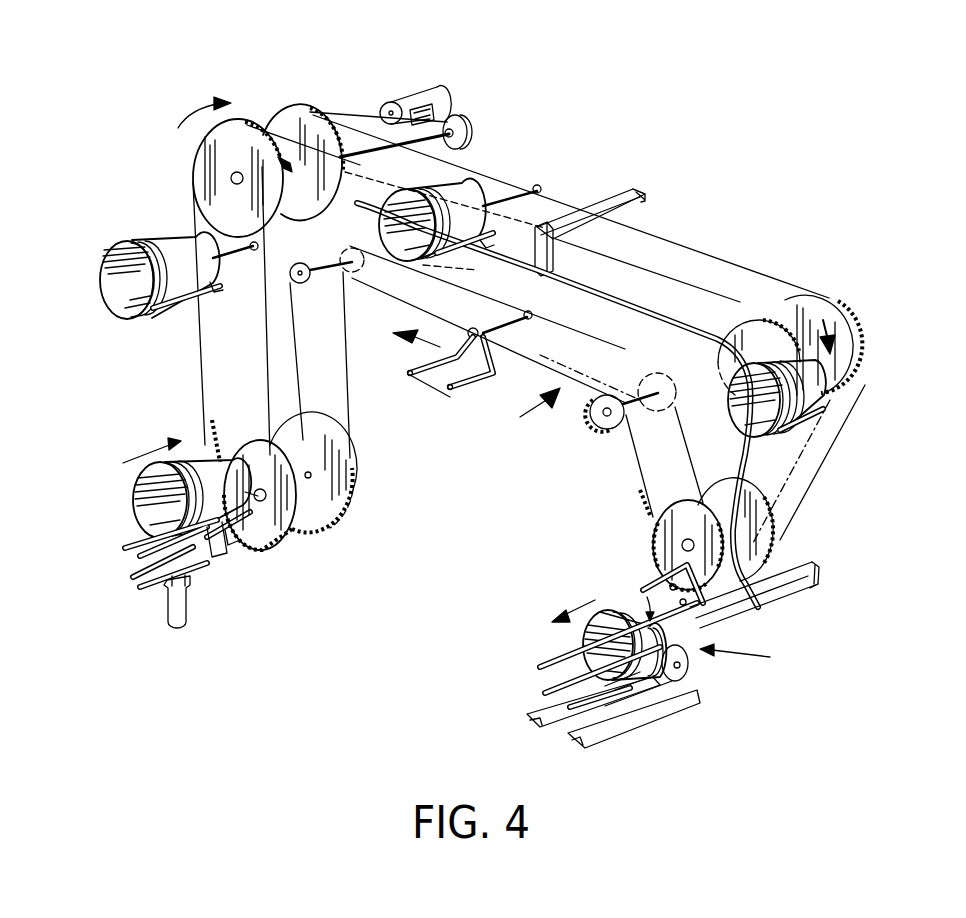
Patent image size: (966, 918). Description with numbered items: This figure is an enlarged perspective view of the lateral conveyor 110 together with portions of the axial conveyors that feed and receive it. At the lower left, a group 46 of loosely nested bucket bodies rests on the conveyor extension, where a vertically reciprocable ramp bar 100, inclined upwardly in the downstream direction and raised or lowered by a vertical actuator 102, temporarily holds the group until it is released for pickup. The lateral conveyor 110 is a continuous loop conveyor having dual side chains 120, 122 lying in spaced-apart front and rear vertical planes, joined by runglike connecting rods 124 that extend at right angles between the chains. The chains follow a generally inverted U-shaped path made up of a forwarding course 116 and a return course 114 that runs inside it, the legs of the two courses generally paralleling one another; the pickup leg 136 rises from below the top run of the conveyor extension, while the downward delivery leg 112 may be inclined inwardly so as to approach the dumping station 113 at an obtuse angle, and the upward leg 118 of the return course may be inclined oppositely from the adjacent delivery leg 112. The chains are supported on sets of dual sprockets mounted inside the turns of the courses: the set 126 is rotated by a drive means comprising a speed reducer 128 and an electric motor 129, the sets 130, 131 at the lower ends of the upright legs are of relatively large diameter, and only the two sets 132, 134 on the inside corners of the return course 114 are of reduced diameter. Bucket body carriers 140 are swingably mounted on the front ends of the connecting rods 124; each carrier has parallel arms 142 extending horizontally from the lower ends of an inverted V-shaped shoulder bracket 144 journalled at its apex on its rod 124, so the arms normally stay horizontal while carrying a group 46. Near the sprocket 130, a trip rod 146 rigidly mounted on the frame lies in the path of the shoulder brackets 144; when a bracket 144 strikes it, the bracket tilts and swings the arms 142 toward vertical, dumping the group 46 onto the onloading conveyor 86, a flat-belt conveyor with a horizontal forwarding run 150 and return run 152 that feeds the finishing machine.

The group of bucket bodies 46 is at (147, 243).
The onloading conveyor 86 is at (647, 705).
The ramp bar 100 is at (147, 557).
The vertical actuator 102 is at (190, 597).
The lateral conveyor 110 is at (520, 417).
The downward delivery leg 112 is at (800, 497).
The dumping station 113 is at (754, 615).
The return course 114 is at (553, 328).
The forwarding course 116 is at (670, 242).
The upward leg of the return course 118 is at (640, 478).
The side chain 120 is at (690, 292).
The side chain 122 is at (760, 278).
The connecting rod 124 is at (222, 264).
The driven set of dual sprockets 126 is at (297, 113).
The speed reducer 128 is at (468, 120).
The electric motor 129 is at (450, 72).
The set of sprockets 130 is at (333, 430).
The set of sprockets 131 is at (678, 508).
The set of sprockets 132 is at (593, 420).
The set of sprockets 134 is at (312, 290).
The pickup leg 136 is at (350, 410).
The bucket body carrier 140 is at (217, 293).
The parallel arms 142 is at (183, 305).
The shoulder bracket 144 is at (890, 387).
The trip rod 146 is at (703, 585).
The forwarding run 150 is at (550, 700).
The return run 152 is at (613, 728).